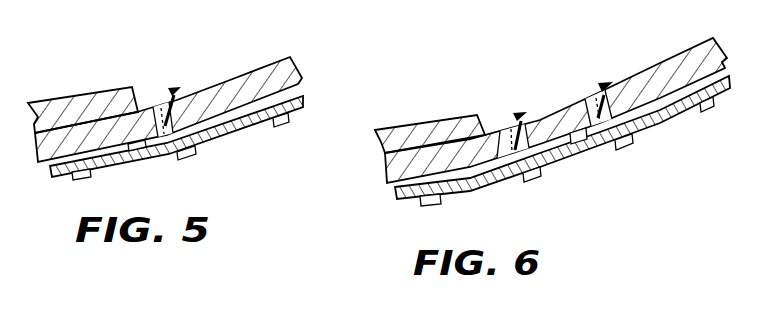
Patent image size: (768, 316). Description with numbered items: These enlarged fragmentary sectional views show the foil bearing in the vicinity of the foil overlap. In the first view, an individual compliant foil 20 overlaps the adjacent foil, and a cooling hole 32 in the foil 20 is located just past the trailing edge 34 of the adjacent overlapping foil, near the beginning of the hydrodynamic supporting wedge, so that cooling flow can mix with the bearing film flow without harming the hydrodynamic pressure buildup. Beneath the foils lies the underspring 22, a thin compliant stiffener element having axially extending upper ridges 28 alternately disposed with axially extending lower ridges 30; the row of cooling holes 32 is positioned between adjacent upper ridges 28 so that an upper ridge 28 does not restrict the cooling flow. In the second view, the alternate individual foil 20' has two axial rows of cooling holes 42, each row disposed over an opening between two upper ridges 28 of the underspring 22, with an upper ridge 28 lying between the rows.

In FIG. 5, the compliant foil 20 is at (165, 98).
In FIG. 6, the alternate individual foil 20' is at (551, 98).
In FIG. 5, the underspring 22 is at (75, 180).
In FIG. 6, the underspring 22 is at (418, 206).
In FIG. 5, the upper ridge 28 is at (251, 128).
In FIG. 6, the upper ridge 28 is at (589, 151).
In FIG. 5, the lower ridge 30 is at (198, 156).
In FIG. 6, the lower ridge 30 is at (541, 182).
In FIG. 5, the cooling hole 32 is at (154, 107).
In FIG. 5, the trailing edge 34 is at (136, 88).
In FIG. 6, the trailing edge 34 is at (488, 120).
In FIG. 6, the cooling hole 42 is at (503, 130).